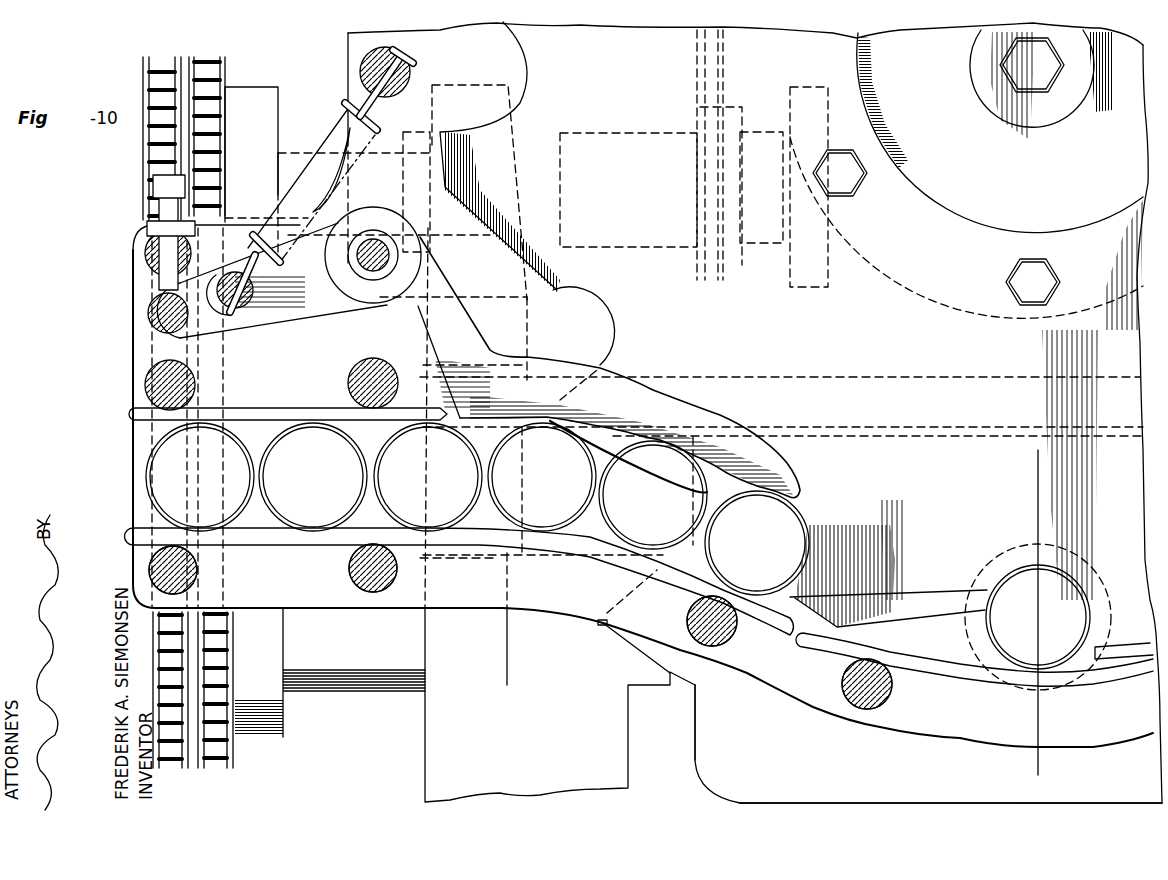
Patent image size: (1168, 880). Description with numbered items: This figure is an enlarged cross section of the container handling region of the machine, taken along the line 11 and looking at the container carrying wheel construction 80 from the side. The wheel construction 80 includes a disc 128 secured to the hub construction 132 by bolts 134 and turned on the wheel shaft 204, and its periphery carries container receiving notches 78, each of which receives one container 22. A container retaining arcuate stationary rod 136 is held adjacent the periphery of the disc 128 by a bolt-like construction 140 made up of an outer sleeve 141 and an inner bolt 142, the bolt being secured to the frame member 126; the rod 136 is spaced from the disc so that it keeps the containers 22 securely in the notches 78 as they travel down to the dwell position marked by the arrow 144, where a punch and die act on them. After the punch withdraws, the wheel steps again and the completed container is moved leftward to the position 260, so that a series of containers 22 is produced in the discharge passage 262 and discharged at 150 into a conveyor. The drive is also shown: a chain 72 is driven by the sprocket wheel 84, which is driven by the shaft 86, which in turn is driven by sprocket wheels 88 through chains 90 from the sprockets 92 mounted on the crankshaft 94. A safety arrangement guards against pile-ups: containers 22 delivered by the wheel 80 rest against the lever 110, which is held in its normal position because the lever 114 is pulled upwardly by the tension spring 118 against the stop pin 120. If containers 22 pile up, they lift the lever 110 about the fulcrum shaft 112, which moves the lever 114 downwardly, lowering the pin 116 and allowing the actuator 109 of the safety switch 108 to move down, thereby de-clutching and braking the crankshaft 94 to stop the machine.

The section line 11- 11 is at (1042, 459).
The container 22 is at (278, 508).
The chain 72 is at (722, 80).
The container receiving notch 78 is at (527, 62).
The container carrying wheel construction 80 is at (944, 348).
The sprocket wheel 84 is at (714, 282).
The shaft 86 is at (533, 160).
The sprocket wheels 88 is at (143, 80).
The chains 90 is at (206, 64).
The sprockets 92 is at (152, 668).
The crankshaft 94 is at (343, 672).
The safety switch 108 is at (158, 188).
The actuator 109 is at (165, 255).
The lever 110 is at (652, 393).
The fulcrum shaft 112 is at (373, 262).
The lever 114 is at (315, 312).
The pin 116 is at (160, 313).
The tension spring 118 is at (317, 137).
The stop pin 120 is at (197, 252).
The frame member 126 is at (973, 740).
The disc 128 is at (915, 598).
The hub construction 132 is at (1040, 183).
The bolts 134 is at (850, 170).
The container retaining arcuate stationary rod 136 is at (938, 677).
The bolt-like construction 140 is at (746, 647).
The outer sleeve 141 is at (152, 588).
The inner bolt 142 is at (165, 568).
The arrow 144 is at (1042, 537).
The discharge point 150 is at (108, 482).
The wheel shaft 204 is at (972, 58).
The completed container position 260 is at (783, 523).
The discharge passage 262 is at (477, 517).